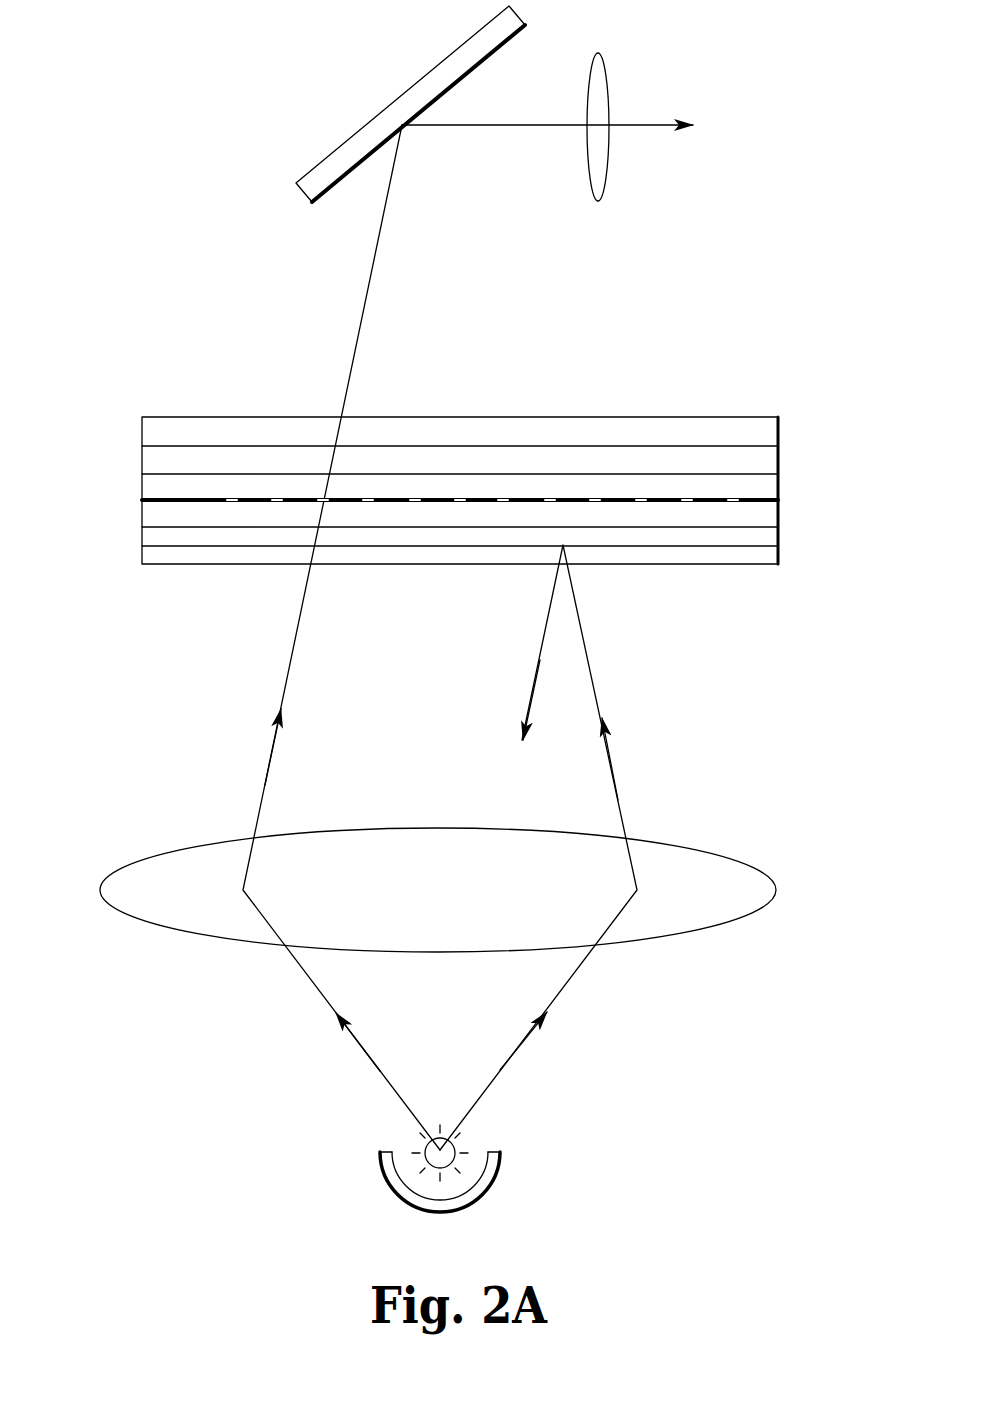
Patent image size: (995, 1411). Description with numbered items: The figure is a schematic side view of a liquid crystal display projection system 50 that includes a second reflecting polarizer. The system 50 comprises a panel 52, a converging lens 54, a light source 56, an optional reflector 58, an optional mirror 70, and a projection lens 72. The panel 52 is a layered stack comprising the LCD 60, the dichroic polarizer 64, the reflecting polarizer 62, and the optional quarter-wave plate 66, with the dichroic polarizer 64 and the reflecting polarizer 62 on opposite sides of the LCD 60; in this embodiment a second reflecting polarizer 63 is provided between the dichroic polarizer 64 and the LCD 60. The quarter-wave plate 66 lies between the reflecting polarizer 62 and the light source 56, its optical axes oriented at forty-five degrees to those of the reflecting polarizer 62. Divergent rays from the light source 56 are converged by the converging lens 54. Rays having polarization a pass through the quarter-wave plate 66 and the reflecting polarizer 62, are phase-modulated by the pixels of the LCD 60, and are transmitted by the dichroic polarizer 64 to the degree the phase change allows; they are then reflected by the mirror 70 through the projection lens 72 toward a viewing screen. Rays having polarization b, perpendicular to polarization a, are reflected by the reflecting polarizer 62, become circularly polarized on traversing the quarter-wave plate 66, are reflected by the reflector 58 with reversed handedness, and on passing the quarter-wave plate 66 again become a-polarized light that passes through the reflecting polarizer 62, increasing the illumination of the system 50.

The system 50 is at (241, 262).
The panel 52 is at (499, 474).
The converging lens 54 is at (738, 862).
The light source 56 is at (453, 1145).
The reflector 58 is at (480, 1190).
The LCD 60 is at (790, 472).
The reflecting polarizer 62 is at (765, 532).
The second reflecting polarizer 63 is at (770, 460).
The dichroic polarizer 64 is at (537, 432).
The quarter-wave plate 66 is at (770, 550).
The mirror 70 is at (435, 80).
The projection lens 72 is at (590, 95).
The polarization a is at (395, 1100).
The polarization b is at (508, 1060).